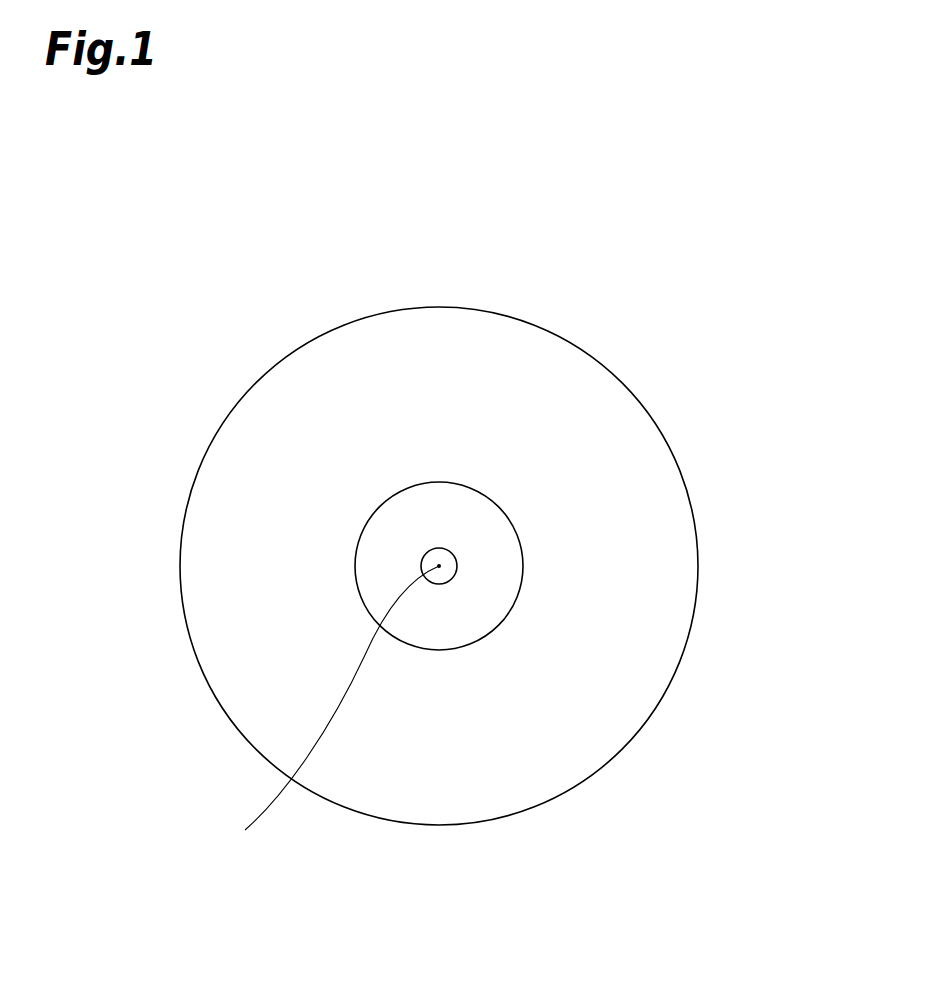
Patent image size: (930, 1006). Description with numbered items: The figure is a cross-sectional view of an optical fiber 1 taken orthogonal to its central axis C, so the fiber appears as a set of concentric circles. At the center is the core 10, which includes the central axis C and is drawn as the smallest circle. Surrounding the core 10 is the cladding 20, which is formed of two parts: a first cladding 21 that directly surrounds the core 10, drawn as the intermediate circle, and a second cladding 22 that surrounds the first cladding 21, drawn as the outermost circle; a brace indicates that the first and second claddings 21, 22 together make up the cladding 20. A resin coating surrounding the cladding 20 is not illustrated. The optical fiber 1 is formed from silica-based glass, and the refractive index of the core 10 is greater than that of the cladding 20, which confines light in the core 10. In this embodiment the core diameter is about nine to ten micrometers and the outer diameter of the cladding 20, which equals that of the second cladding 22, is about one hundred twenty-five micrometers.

The optical fiber 1 is at (493, 534).
The core 10 is at (445, 562).
The cladding 20 is at (493, 566).
The first cladding 21 is at (505, 562).
The second cladding 22 is at (681, 602).
The central axis C is at (328, 708).